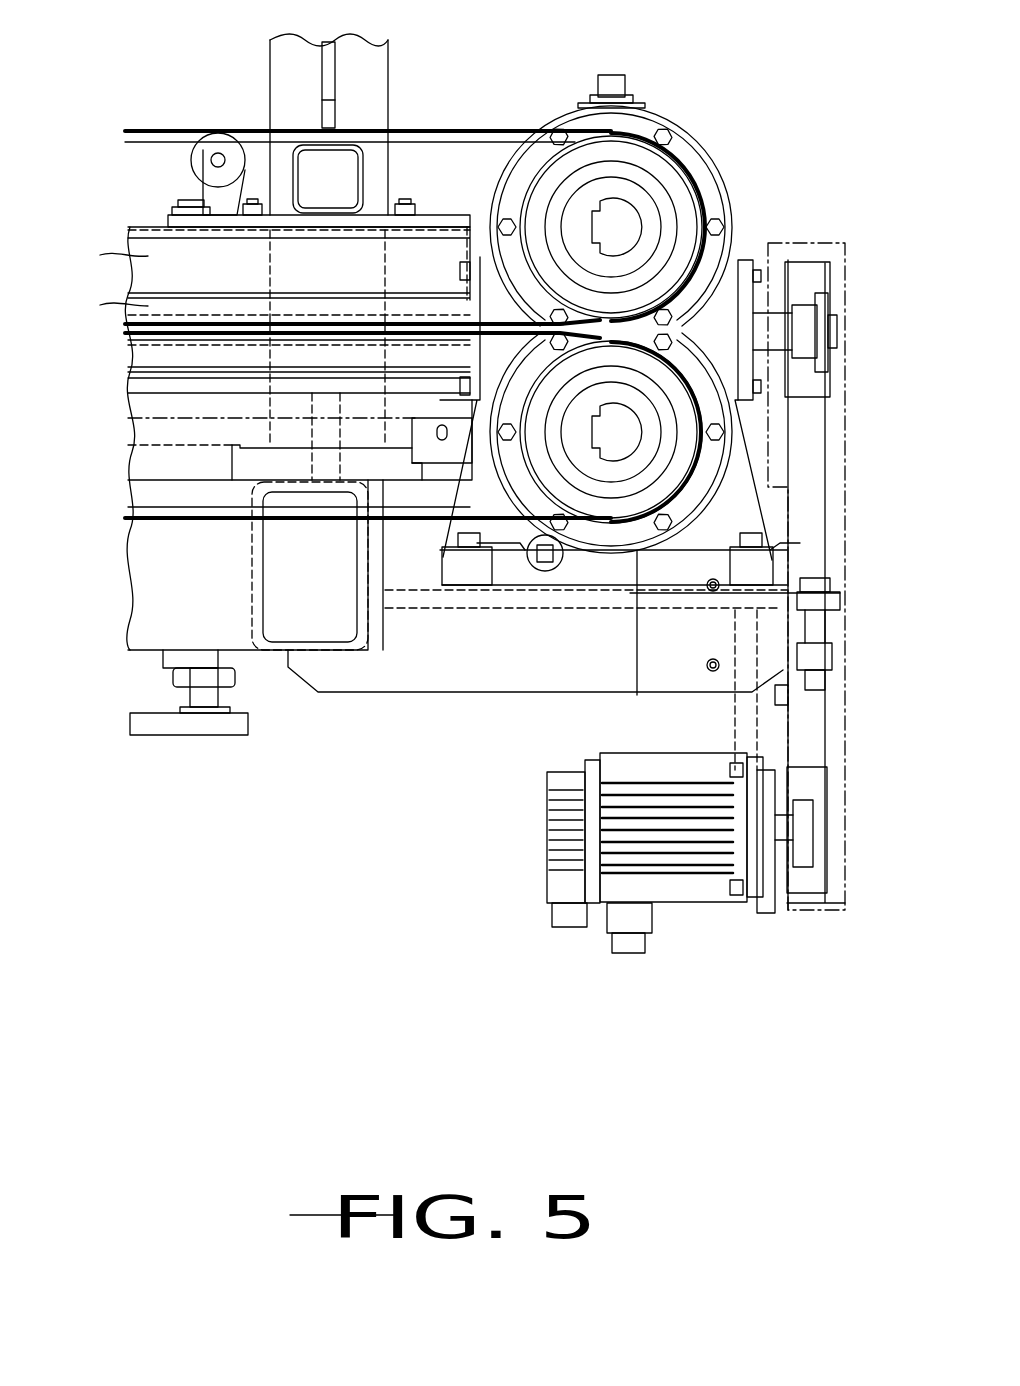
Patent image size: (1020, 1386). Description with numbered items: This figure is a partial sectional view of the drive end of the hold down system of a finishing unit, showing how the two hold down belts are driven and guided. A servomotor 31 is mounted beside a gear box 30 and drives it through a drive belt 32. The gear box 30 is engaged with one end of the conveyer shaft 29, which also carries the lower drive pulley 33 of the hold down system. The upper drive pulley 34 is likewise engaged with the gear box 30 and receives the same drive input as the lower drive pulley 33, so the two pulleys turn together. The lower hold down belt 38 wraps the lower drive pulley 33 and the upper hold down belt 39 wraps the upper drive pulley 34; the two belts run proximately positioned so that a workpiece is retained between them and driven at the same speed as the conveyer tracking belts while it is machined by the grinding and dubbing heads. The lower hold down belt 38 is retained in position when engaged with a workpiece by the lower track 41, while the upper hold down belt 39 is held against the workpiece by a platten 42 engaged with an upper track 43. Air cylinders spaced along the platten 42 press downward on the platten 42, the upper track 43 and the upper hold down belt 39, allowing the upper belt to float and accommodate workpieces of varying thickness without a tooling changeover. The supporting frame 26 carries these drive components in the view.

The frame 26 is at (497, 668).
The conveyer shaft 29 is at (622, 432).
The gear box 30 is at (727, 310).
The servomotor 31 is at (702, 867).
The drive belt 32 is at (808, 722).
The lower drive pulley 33 is at (670, 482).
The upper drive pulley 34 is at (675, 190).
The lower hold down belt 38 is at (420, 523).
The upper hold down belt 39 is at (420, 128).
The lower track 41 is at (148, 352).
The platten 42 is at (148, 256).
The upper track 43 is at (150, 304).